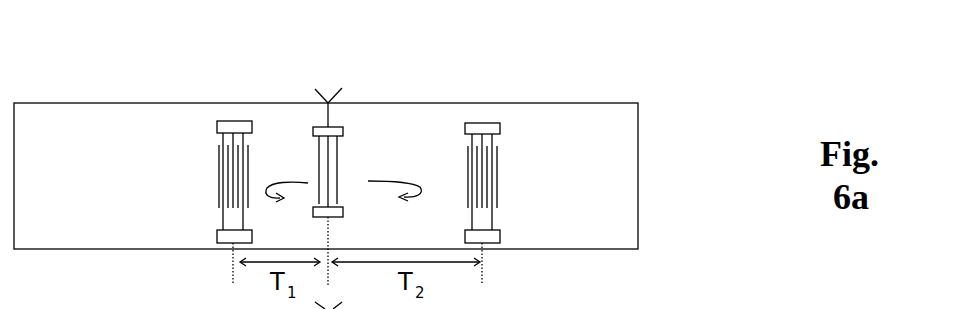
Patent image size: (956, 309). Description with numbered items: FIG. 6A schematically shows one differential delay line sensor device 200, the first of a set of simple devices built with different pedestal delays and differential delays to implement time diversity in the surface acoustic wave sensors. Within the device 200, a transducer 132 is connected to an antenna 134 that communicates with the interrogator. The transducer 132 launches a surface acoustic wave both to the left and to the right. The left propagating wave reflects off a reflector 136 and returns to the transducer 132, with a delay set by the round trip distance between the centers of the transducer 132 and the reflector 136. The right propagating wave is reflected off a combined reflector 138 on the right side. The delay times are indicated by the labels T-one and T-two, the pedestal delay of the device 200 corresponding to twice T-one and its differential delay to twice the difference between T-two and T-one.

The differential delay line sensor device 200 is at (661, 193).
The transducer 132 is at (304, 151).
The antenna 134 is at (344, 82).
The reflector 136 is at (204, 141).
The combined reflector 138 is at (482, 110).